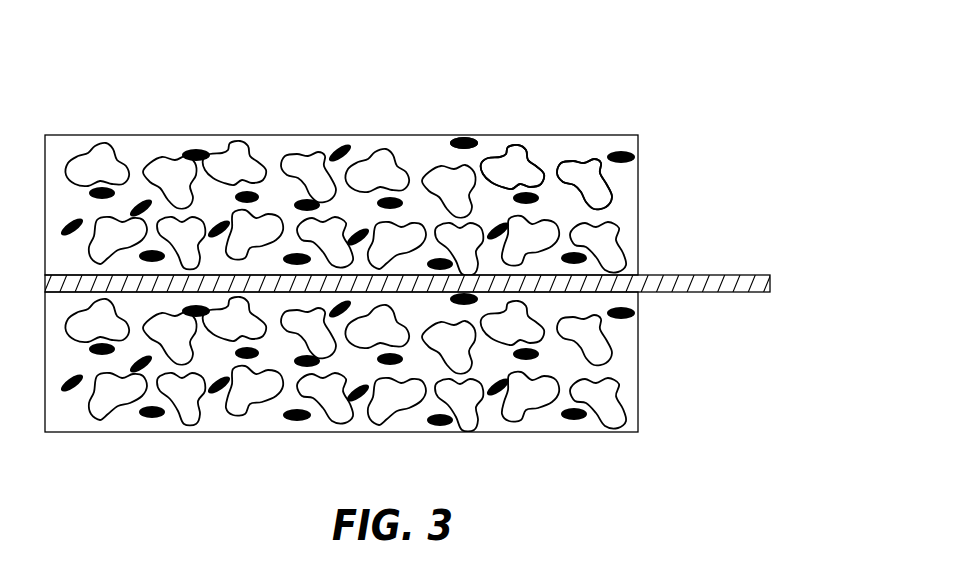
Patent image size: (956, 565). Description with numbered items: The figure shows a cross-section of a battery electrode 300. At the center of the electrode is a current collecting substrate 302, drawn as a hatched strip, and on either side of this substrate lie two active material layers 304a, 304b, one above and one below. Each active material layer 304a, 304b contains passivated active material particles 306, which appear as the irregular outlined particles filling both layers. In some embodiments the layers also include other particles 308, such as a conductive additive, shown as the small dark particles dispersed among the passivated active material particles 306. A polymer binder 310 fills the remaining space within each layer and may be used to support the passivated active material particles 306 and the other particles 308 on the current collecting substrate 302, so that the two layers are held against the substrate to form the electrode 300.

The battery electrode 300 is at (746, 101).
The current collecting substrate 302 is at (755, 273).
The active material layer 304a is at (655, 133).
The active material layer 304b is at (655, 290).
The passivated active material particles 306 is at (521, 147).
The other particles 308 is at (461, 137).
The polymer binder 310 is at (587, 148).